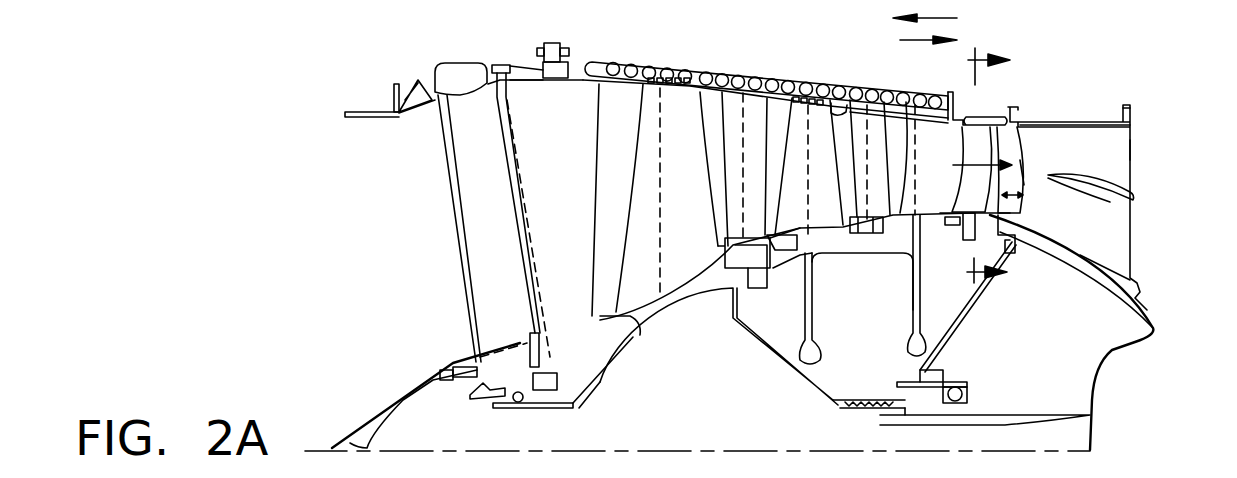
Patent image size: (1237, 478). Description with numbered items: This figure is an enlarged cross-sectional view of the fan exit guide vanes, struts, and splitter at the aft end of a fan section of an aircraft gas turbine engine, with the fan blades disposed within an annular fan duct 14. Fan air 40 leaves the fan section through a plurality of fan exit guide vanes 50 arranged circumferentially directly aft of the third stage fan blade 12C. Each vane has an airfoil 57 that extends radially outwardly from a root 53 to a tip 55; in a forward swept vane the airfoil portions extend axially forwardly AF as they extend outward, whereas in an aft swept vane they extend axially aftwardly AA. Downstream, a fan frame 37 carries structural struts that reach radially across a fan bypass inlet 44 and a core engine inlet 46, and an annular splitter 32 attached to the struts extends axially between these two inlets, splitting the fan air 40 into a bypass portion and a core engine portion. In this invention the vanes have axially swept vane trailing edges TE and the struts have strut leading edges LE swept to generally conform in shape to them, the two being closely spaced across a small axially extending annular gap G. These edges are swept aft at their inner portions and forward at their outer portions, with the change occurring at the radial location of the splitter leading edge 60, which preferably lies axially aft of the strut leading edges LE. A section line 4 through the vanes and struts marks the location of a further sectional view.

The annular fan duct 14 is at (845, 108).
The tip 55 is at (945, 113).
The fan exit guide vanes 50 is at (988, 135).
The fan air 40 is at (998, 135).
The fan frame 37 is at (1115, 112).
The fan bypass inlet 44 is at (1120, 163).
The annular splitter 32 is at (1115, 183).
The airfoil 57 is at (993, 183).
The splitter leading edge 60 is at (1046, 175).
The core engine inlet 46 is at (1115, 250).
The root 53 is at (1003, 258).
The third stage fan blade 12C is at (895, 247).
The section line 4- 4 is at (976, 168).
The vane trailing edges TE is at (1015, 128).
The strut leading edges LE is at (1025, 182).
The annular gap G is at (1028, 205).
The axially aftwardly AA is at (908, 27).
The axially forwardly AF is at (945, 20).